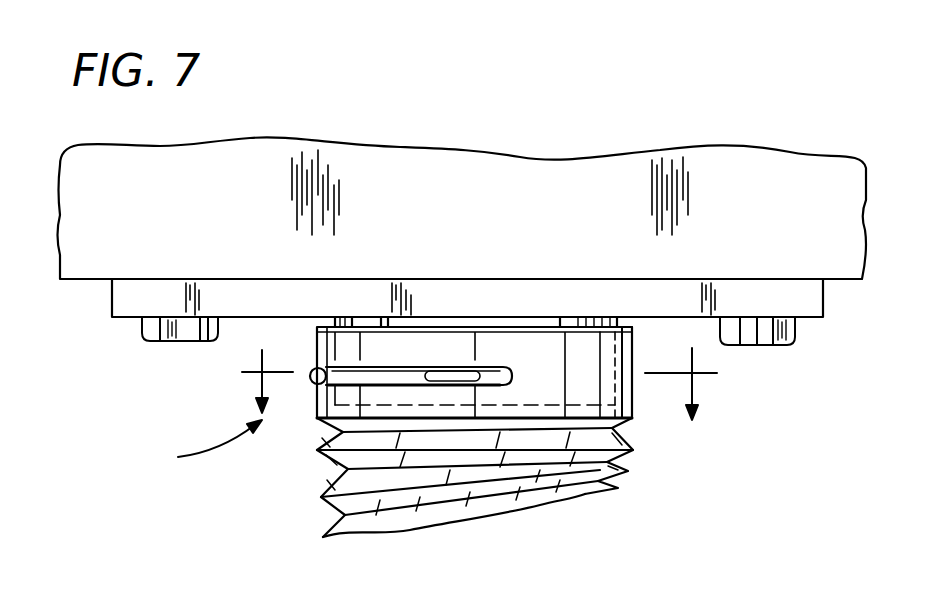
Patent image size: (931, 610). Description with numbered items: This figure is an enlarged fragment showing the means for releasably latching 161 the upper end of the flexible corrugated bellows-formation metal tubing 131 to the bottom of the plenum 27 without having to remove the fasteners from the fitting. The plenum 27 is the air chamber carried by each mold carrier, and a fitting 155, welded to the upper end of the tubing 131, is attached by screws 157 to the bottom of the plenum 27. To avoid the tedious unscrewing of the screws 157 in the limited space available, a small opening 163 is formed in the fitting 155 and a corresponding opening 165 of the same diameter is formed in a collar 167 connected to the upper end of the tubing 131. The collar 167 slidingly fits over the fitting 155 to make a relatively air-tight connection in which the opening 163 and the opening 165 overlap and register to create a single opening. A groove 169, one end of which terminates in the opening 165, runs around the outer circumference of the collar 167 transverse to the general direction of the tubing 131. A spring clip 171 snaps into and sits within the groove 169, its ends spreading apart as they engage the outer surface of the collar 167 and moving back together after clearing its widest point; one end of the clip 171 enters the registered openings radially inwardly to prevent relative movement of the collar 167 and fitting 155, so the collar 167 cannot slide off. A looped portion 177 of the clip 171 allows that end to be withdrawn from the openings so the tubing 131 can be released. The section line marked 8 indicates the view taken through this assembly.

The plenum 27 is at (93, 263).
The screws 157 is at (160, 341).
The groove 169 is at (315, 412).
The fitting 155 is at (617, 387).
The collar 167 is at (634, 350).
The spring clip 171 is at (373, 367).
The looped portion 177 is at (445, 385).
The opening 165 is at (566, 532).
The opening 163 is at (475, 479).
The flexible corrugated bellows-formation metal tubing 131 is at (322, 500).
The means for releasably latching 161 is at (194, 447).
The section line 8- 8 is at (473, 380).